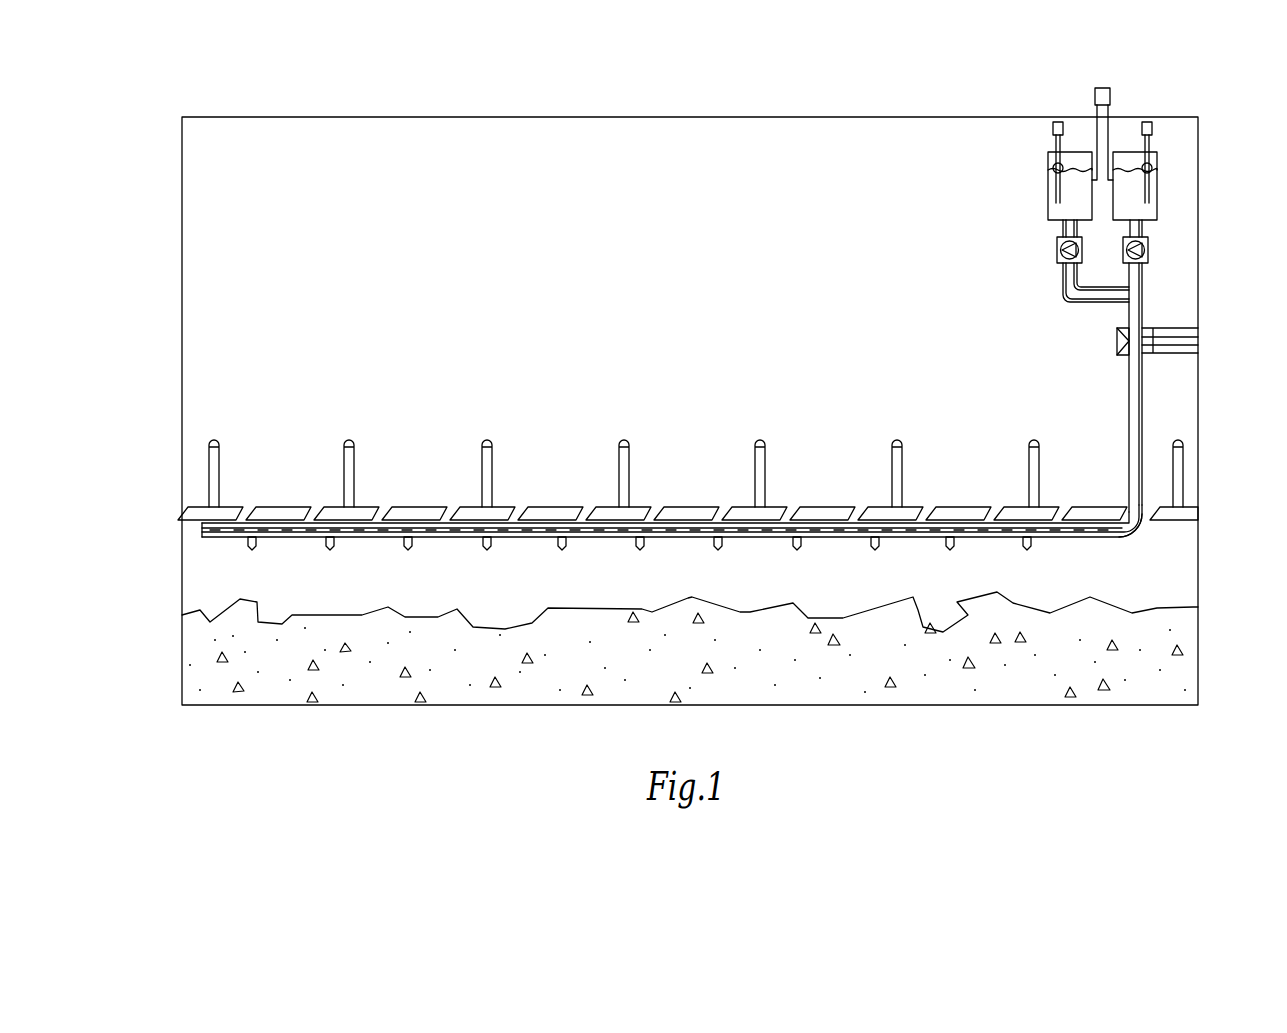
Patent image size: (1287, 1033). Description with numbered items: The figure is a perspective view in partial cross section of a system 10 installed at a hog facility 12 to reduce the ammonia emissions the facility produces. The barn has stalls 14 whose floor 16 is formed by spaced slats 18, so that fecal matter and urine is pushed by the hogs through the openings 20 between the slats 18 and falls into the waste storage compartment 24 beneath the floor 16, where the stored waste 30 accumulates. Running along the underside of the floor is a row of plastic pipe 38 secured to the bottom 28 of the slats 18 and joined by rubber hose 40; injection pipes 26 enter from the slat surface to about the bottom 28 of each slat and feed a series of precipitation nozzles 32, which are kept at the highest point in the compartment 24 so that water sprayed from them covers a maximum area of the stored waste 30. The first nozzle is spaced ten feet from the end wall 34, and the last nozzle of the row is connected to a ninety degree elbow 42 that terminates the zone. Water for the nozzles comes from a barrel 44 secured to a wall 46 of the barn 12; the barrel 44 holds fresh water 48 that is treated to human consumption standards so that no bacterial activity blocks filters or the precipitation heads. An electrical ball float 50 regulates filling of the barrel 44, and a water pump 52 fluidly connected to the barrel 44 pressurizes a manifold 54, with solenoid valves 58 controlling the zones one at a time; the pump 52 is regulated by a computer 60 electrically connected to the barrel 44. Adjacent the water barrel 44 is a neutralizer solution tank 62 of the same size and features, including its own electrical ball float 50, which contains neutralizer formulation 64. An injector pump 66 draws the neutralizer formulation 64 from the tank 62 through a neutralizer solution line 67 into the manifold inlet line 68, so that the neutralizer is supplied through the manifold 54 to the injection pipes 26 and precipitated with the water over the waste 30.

The system 10 is at (1222, 146).
The hog facility 12 is at (180, 305).
The stalls 14 is at (490, 438).
The floor 16 is at (1195, 427).
The slats 18 is at (205, 512).
The openings 20 is at (490, 537).
The waste storage compartment 24 is at (742, 592).
The injection pipes 26 is at (915, 558).
The bottom of slat 28 is at (202, 527).
The stored waste 30 is at (853, 682).
The precipitation nozzles 32 is at (640, 550).
The end wall 34 is at (205, 400).
The pipe 38 is at (830, 538).
The rubber hose 40 is at (1143, 300).
The elbow 42 is at (1130, 536).
The barrel 44 is at (1160, 206).
The wall 46 is at (550, 292).
The fresh water 48 is at (1127, 168).
The electrical ball float 50 is at (1058, 122).
The water pump 52 is at (1150, 253).
The manifold 54 is at (1197, 382).
The solenoid valves 58 is at (1165, 328).
The computer 60 is at (1101, 88).
The neutralizer solution tank 62 is at (1048, 200).
The neutralizer formulation 64 is at (1072, 172).
The injector pump 66 is at (1057, 251).
The neutralizer solution line 67 is at (1068, 302).
The manifold inlet line 68 is at (1120, 329).